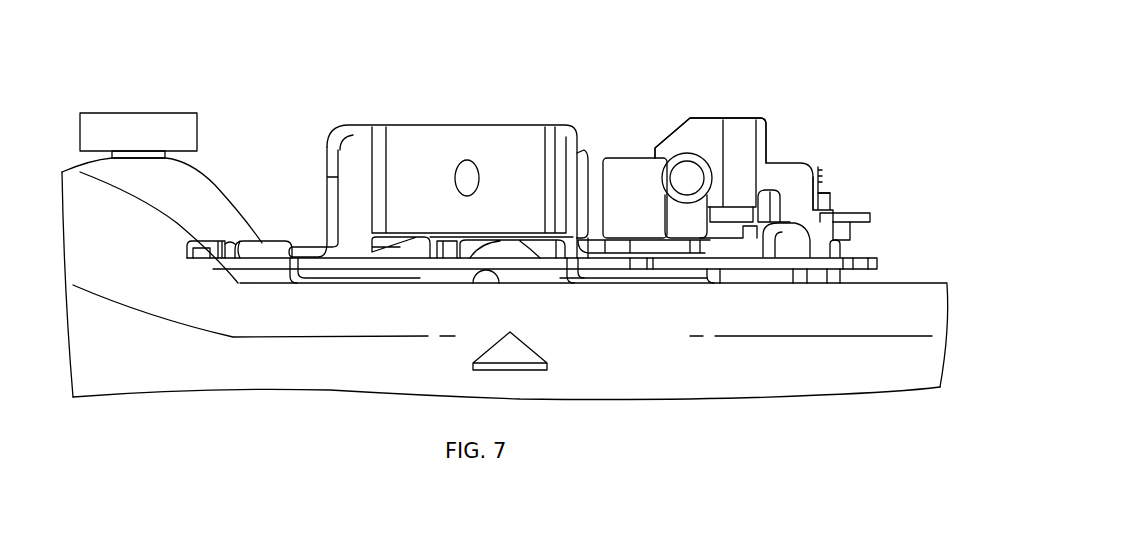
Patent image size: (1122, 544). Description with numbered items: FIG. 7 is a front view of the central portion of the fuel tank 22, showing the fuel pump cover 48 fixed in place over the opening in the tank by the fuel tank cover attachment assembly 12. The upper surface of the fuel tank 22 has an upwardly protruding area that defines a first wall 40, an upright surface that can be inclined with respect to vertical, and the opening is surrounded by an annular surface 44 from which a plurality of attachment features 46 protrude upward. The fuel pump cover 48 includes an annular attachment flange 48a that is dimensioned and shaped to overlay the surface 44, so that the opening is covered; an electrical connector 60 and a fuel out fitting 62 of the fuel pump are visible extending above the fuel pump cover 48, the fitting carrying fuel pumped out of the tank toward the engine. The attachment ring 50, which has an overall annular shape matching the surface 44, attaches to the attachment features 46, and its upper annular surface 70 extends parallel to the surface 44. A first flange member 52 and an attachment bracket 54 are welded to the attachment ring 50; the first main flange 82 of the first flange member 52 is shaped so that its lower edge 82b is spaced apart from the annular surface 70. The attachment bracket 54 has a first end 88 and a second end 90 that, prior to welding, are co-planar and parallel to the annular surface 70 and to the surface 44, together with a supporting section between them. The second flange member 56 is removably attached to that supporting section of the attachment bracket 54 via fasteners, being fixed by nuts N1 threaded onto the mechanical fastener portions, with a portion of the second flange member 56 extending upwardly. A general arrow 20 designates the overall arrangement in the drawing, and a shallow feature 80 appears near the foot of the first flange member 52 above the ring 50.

The fuel tank cover attachment assembly 12 is at (732, 222).
The assembly 20 is at (781, 111).
The fuel tank 22 is at (916, 313).
The first wall 40 is at (220, 201).
The annular surface 44 is at (482, 272).
The attachment features 46 is at (282, 246).
The fuel pump cover 48 is at (316, 242).
The annular attachment flange 48a is at (352, 270).
The attachment ring 50 is at (255, 262).
The first flange member 52 is at (420, 112).
The attachment bracket 54 is at (799, 198).
The second flange member 56 is at (733, 107).
The electrical connector 60 is at (630, 183).
The fuel out fitting 62 is at (688, 177).
The annular surface 70 is at (398, 252).
The foot 80 is at (567, 262).
The first main flange 82 is at (515, 162).
The lower edge 82b is at (425, 238).
The first end 88 is at (780, 213).
The second end 90 is at (837, 227).
The nuts N1 is at (835, 196).